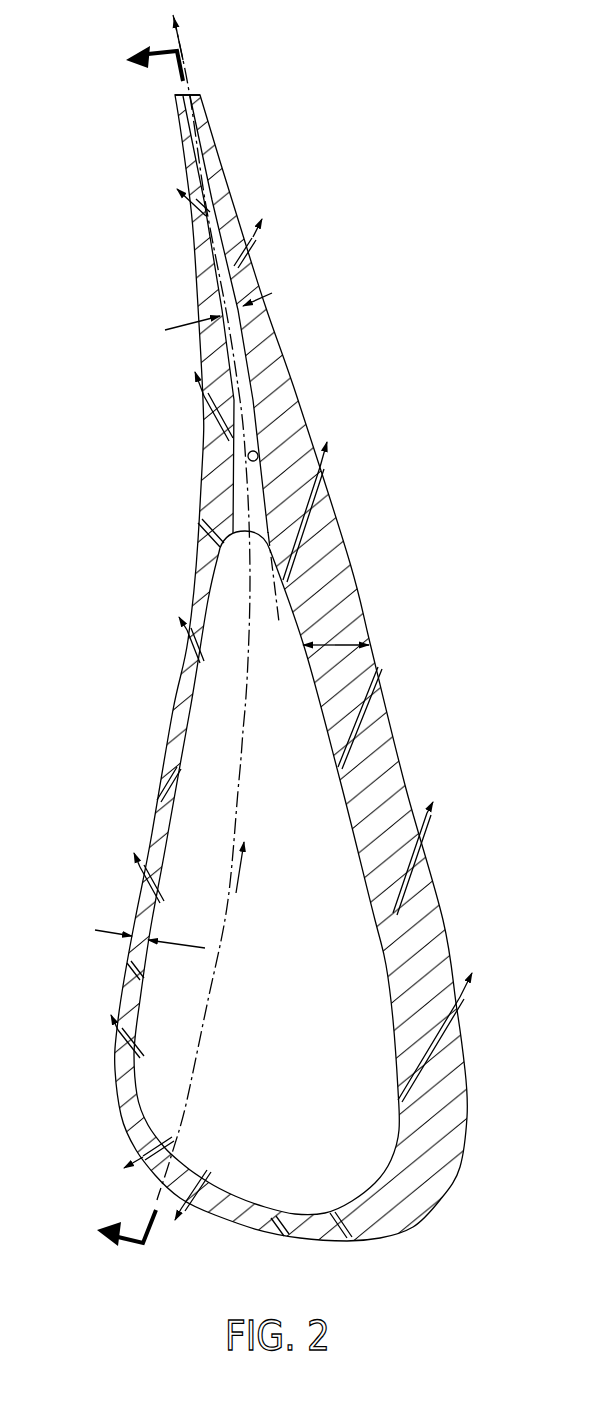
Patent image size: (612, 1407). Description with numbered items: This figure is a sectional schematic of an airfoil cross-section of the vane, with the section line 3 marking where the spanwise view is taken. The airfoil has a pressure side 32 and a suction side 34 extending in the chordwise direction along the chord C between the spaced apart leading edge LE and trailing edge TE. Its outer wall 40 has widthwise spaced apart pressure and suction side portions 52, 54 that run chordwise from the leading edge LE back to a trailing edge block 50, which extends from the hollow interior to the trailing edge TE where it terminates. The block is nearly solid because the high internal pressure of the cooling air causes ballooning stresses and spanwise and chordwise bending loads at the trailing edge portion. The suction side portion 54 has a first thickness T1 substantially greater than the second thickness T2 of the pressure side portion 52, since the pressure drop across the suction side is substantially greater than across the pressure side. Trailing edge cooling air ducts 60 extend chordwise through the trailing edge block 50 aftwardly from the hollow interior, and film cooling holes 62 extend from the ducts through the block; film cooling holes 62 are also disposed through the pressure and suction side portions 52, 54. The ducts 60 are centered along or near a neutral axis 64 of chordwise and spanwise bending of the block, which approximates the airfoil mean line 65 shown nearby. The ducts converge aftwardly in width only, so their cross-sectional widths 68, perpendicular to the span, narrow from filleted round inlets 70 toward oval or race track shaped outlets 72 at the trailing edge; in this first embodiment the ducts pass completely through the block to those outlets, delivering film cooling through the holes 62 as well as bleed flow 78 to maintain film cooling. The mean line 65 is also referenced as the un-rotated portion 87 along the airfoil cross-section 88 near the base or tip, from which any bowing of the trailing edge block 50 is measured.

The pressure side 32 is at (190, 588).
The suction side 34 is at (350, 562).
The outer wall 40 is at (434, 884).
The trailing edge block 50 is at (97, 96).
The pressure side portion 52 is at (173, 712).
The suction side portion 54 is at (402, 744).
The trailing edge cooling air ducts 60 is at (258, 449).
The film cooling holes 62 is at (278, 331).
The neutral axis 64 is at (268, 591).
The airfoil mean line 65 is at (241, 798).
The cross-sectional widths 68 is at (184, 322).
The filleted round inlets 70 is at (255, 529).
The outlets 72 is at (190, 90).
The bleed flow 78 is at (180, 37).
The un-rotated portion 87 is at (217, 240).
The airfoil cross-section 88 is at (203, 470).
The trailing edge TE is at (178, 96).
The leading edge LE is at (155, 1170).
The chord C is at (240, 872).
The first thickness T1 is at (334, 644).
The second thickness T2 is at (84, 932).
The section line 3- 3 is at (123, 646).